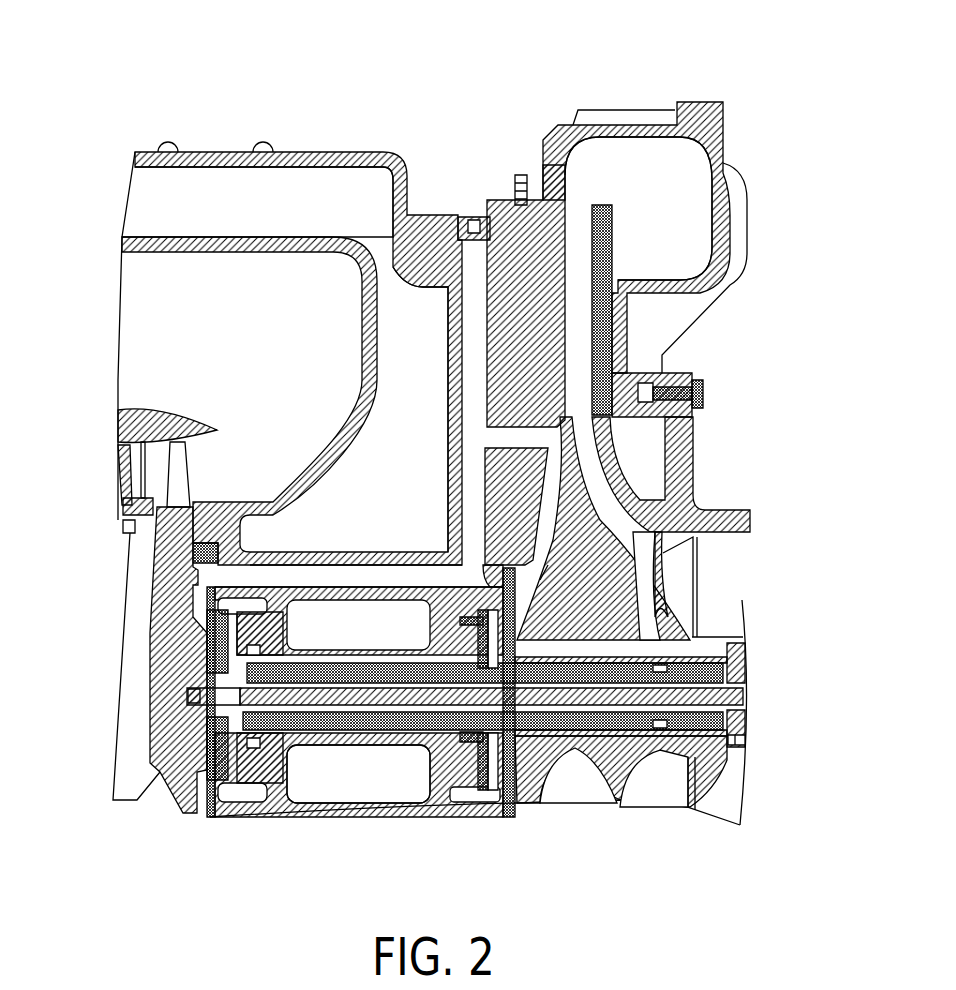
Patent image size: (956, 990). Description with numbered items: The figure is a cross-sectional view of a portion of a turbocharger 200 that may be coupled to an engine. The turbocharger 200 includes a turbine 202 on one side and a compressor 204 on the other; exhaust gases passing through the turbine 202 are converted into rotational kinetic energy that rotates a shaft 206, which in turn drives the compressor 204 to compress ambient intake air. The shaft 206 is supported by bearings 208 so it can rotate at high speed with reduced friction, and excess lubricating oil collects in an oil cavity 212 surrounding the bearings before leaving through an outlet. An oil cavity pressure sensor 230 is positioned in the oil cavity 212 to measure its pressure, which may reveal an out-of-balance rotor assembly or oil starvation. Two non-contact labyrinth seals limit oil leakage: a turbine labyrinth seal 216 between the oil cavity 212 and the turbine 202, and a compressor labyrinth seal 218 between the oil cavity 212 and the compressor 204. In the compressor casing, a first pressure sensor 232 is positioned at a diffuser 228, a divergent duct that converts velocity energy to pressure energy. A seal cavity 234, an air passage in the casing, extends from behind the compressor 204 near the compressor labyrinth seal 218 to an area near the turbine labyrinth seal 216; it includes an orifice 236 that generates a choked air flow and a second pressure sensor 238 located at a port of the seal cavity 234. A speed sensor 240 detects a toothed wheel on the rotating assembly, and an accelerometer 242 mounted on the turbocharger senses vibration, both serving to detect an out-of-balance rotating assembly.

The turbocharger 200 is at (248, 70).
The turbine 202 is at (90, 578).
The compressor 204 is at (775, 585).
The shaft 206 is at (748, 718).
The bearings 208 is at (257, 647).
The oil cavity 212 is at (378, 628).
The turbine labyrinth seal 216 is at (200, 621).
The compressor labyrinth seal 218 is at (512, 800).
The diffuser 228 is at (627, 185).
The oil cavity pressure sensor 230 is at (345, 793).
The first pressure sensor 232 is at (662, 241).
The seal cavity 234 is at (335, 588).
The orifice 236 is at (503, 450).
The second pressure sensor 238 is at (459, 207).
The speed sensor 240 is at (247, 661).
The accelerometer 242 is at (319, 143).